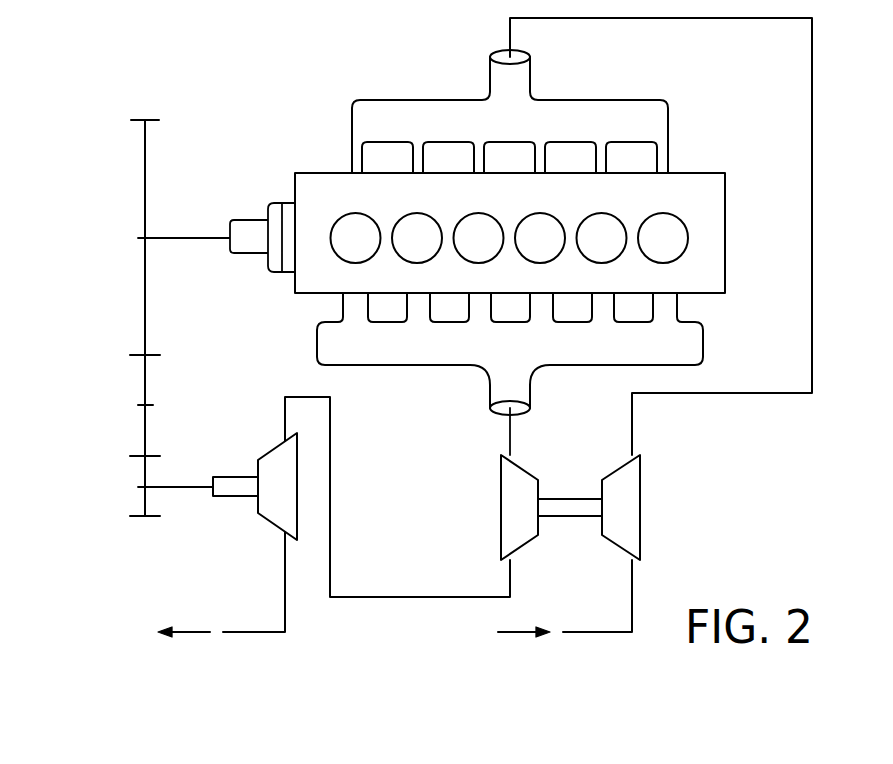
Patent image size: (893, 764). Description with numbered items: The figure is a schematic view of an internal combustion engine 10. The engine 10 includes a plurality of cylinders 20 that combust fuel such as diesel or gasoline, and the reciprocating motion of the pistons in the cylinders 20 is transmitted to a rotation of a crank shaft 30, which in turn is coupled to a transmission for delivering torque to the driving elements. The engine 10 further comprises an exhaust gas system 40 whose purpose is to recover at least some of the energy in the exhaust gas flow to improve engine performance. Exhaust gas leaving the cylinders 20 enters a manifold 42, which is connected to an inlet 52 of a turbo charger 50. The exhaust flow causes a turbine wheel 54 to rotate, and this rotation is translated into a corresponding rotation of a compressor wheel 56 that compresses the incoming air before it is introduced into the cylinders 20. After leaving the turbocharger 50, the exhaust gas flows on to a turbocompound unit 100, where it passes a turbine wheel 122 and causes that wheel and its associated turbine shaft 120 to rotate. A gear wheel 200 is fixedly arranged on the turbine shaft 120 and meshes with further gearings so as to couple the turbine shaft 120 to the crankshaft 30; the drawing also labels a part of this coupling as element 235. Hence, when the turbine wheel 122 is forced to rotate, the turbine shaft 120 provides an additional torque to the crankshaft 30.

The internal combustion engine 10 is at (282, 52).
The cylinders 20 is at (678, 249).
The crank shaft 30 is at (190, 238).
The exhaust gas system 40 is at (715, 432).
The manifold 42 is at (681, 343).
The turbo charger 50 is at (585, 580).
The inlet 52 is at (508, 427).
The turbine wheel 54 is at (515, 508).
The compressor wheel 56 is at (627, 508).
The turbocompound unit 100 is at (222, 522).
The turbine shaft 120 is at (236, 481).
The turbine wheel 122 is at (274, 458).
The gear wheel 200 is at (141, 517).
The drive coupling 235 is at (110, 385).